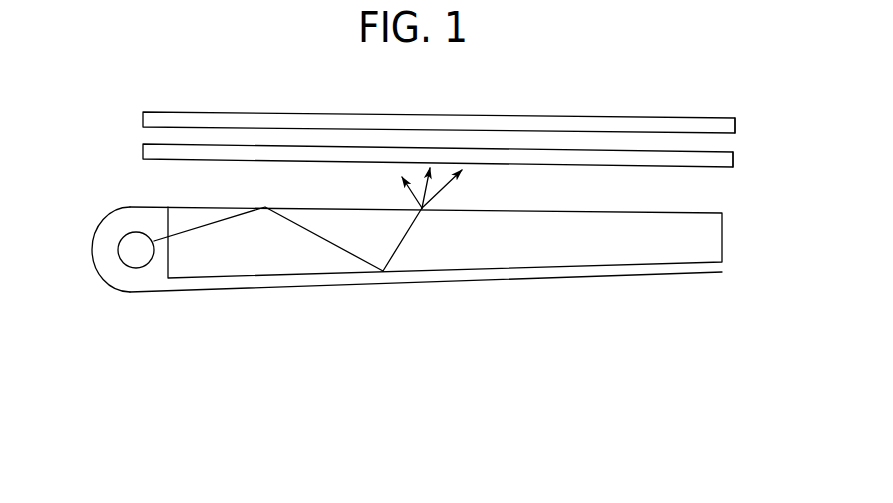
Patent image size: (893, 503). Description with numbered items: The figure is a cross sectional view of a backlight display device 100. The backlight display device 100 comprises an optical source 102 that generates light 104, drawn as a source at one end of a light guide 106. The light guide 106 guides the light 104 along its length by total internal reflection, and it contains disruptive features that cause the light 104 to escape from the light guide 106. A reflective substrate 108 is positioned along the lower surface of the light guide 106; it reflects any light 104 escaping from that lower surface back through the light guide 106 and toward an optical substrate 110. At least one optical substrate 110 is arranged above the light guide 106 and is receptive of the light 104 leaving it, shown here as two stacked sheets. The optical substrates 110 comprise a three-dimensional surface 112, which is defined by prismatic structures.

The backlight display device 100 is at (190, 357).
The optical source 102 is at (118, 256).
The light 104 is at (343, 250).
The light guide 106 is at (722, 238).
The reflective substrate 108 is at (530, 279).
The optical substrate 110 is at (143, 118).
The three-dimensional surface 112 is at (725, 152).